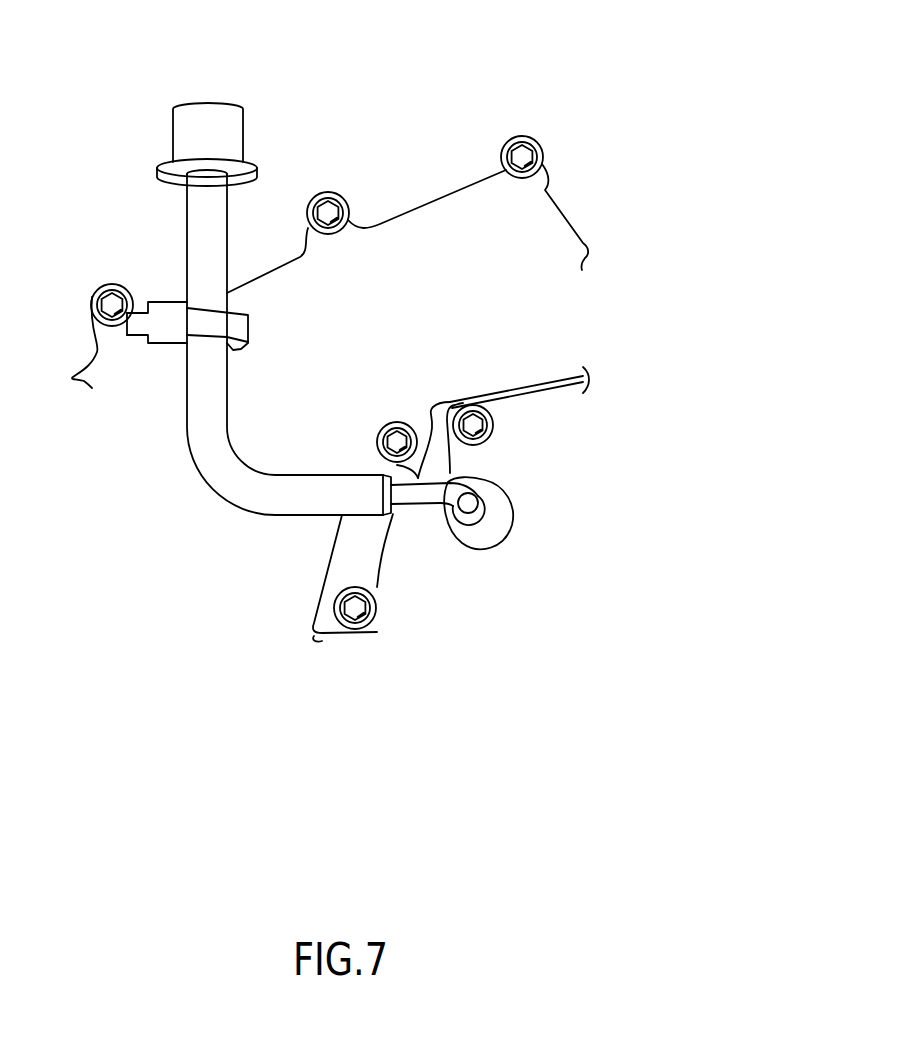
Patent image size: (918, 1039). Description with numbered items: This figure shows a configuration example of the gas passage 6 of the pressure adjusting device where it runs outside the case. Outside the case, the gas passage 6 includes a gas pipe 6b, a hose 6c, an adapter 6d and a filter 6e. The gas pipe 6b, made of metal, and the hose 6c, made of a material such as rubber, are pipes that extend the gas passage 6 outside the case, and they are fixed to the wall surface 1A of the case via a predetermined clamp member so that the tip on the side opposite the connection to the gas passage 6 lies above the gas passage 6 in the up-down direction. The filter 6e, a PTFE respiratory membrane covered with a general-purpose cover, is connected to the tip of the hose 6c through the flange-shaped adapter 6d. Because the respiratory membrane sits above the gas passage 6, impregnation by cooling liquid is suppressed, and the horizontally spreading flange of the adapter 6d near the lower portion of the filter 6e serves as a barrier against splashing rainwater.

The wall surface 1A is at (533, 428).
The gas passage 6 is at (503, 520).
The gas pipe 6b is at (422, 507).
The hose 6c is at (218, 462).
The adapter 6d is at (257, 187).
The filter 6e is at (183, 133).